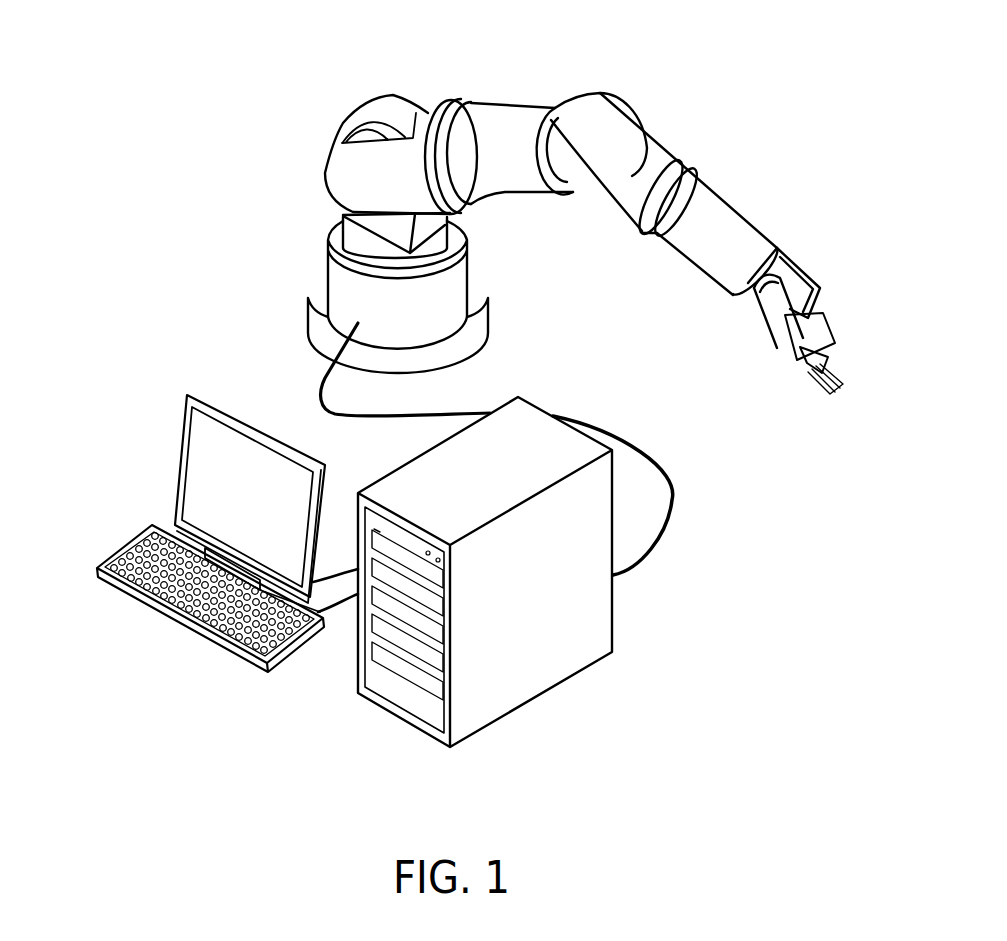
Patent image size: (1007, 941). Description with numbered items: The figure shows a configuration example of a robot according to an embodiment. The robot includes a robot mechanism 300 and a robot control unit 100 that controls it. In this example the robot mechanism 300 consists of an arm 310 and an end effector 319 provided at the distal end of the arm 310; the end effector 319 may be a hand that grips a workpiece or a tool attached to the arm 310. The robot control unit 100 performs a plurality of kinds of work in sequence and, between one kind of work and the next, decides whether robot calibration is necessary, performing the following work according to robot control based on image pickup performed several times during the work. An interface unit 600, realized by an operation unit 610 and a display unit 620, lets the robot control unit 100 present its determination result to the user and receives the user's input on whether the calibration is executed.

The robot control unit 100 is at (557, 662).
The robot mechanism 300 is at (357, 87).
The arm 310 is at (590, 219).
The end effector 319 is at (822, 388).
The interface unit 600 is at (82, 381).
The operation unit 610 is at (182, 618).
The display unit 620 is at (228, 410).